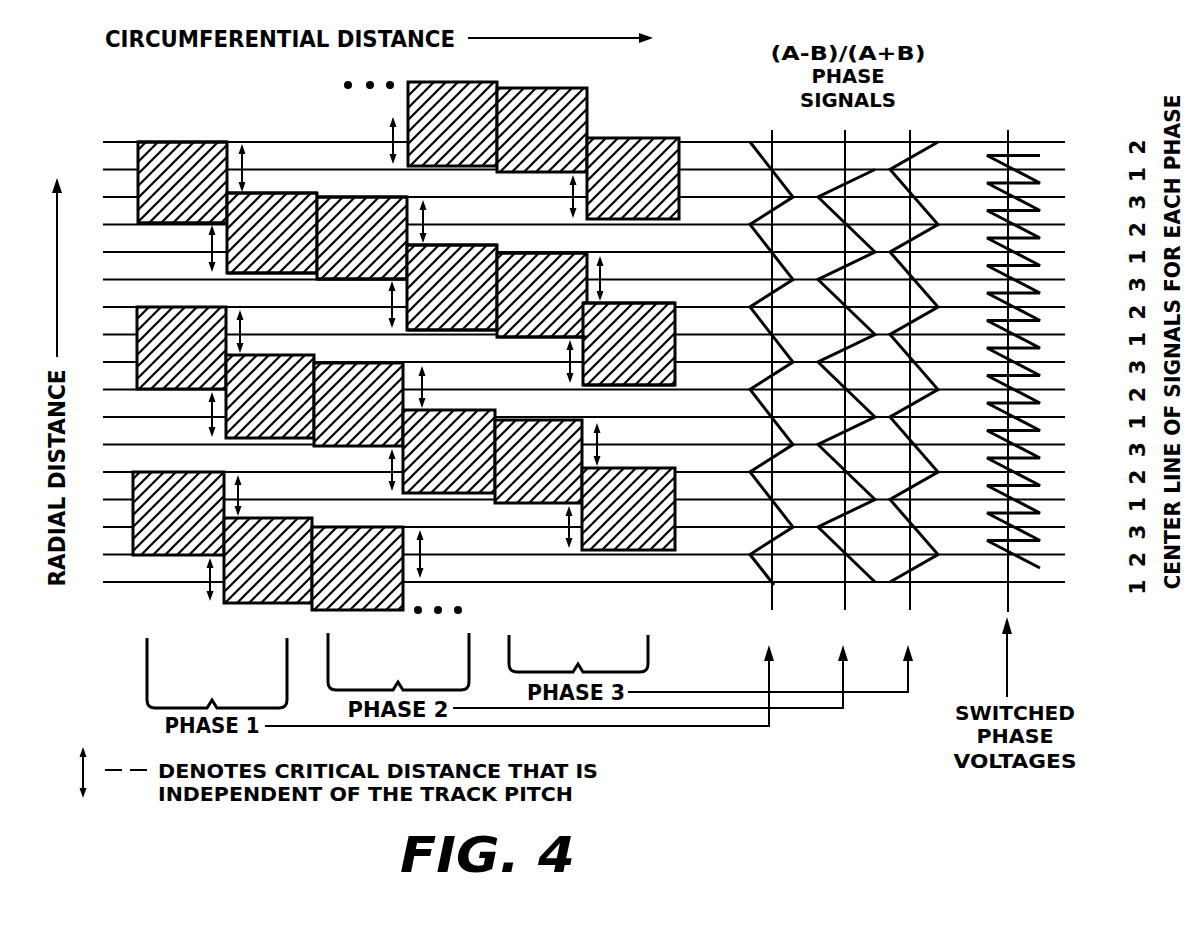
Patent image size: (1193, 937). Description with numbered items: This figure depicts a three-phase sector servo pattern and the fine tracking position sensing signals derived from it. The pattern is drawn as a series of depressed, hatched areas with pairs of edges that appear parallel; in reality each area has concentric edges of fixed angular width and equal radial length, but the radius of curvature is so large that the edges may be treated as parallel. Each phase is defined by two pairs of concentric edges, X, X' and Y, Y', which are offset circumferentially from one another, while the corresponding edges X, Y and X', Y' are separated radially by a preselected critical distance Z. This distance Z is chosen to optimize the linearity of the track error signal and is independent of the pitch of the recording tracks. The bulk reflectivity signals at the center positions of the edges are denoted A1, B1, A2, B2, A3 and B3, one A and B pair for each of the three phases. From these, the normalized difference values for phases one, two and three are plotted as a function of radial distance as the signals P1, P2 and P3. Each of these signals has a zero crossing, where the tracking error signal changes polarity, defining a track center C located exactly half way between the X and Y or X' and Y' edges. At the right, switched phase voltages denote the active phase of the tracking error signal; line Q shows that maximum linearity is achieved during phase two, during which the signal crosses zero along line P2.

The bulk reflectivity signal A1 is at (180, 401).
The bulk reflectivity signal B1 is at (270, 426).
The bulk reflectivity signal A2 is at (359, 428).
The bulk reflectivity signal B2 is at (450, 371).
The bulk reflectivity signal A3 is at (541, 374).
The bulk reflectivity signal B3 is at (630, 399).
The concentric edge X is at (362, 179).
The concentric edge Y is at (466, 238).
The concentric edge X' is at (362, 291).
The concentric edge Y' is at (451, 345).
The critical distance Z is at (212, 256).
The track center C is at (701, 262).
The phase 1 track error signal P1 is at (770, 610).
The phase 2 track error signal P2 is at (843, 610).
The phase 3 track error signal P3 is at (908, 610).
The switched phase voltage line Q is at (1048, 309).